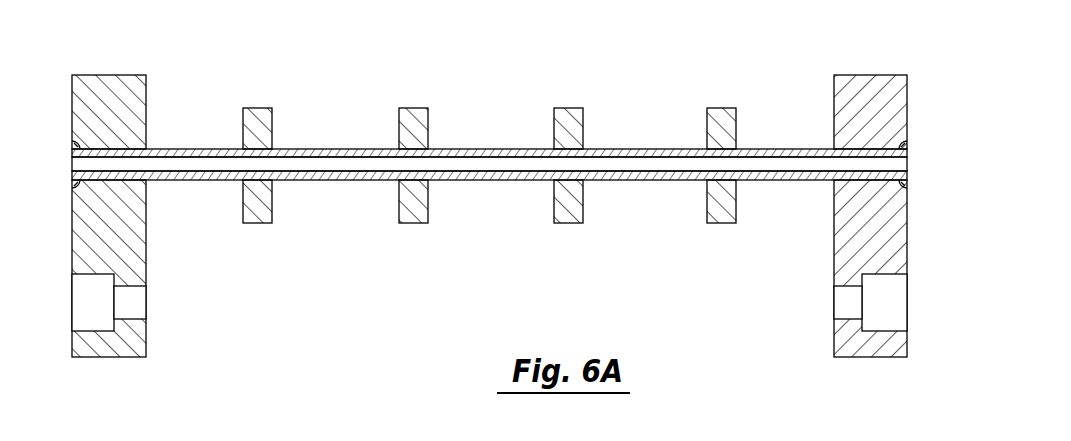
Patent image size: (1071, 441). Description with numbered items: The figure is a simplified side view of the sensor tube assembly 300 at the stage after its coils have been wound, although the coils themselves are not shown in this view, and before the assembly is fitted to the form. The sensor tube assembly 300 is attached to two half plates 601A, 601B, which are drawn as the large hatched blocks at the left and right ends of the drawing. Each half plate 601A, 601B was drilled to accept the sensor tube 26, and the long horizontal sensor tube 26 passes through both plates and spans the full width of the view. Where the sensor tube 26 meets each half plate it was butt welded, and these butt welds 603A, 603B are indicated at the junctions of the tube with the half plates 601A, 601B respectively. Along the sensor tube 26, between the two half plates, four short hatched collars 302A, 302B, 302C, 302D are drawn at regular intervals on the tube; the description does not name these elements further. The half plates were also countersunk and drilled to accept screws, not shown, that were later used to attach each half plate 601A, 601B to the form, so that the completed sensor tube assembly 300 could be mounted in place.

The sensor tube assembly 300 is at (488, 216).
The sensor tube 26 is at (195, 181).
The half plate 601A is at (146, 97).
The half plate 601B is at (834, 97).
The butt weld 603A is at (73, 146).
The butt weld 603B is at (906, 146).
The spacer 302A is at (258, 224).
The spacer 302B is at (415, 224).
The spacer 302C is at (568, 225).
The spacer 302D is at (722, 225).